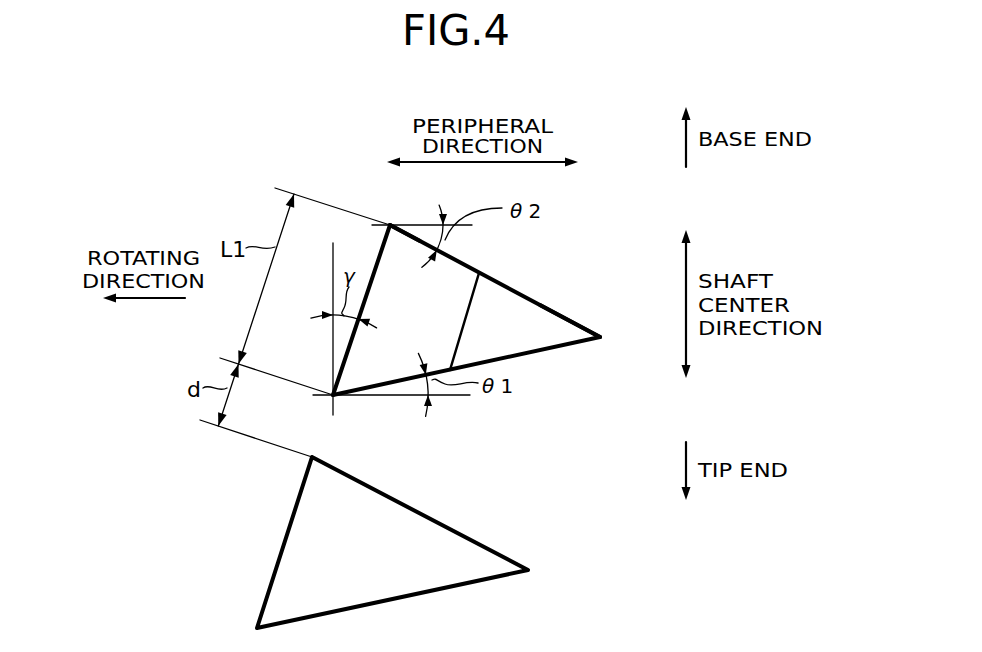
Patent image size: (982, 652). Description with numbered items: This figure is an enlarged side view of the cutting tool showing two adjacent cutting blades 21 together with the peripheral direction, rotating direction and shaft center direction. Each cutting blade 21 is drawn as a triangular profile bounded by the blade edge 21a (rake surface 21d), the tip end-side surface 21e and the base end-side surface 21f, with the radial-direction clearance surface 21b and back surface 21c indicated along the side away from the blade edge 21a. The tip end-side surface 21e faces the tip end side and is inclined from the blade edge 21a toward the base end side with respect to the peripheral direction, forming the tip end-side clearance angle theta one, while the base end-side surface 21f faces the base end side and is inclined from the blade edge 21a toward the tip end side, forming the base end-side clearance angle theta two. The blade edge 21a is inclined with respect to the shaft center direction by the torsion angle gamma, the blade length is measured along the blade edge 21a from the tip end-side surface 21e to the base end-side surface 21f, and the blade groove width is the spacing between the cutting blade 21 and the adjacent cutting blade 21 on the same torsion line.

The cutting blade 21 is at (527, 273).
The blade edge 21a is at (375, 268).
The radial-direction clearance surface 21b is at (443, 283).
The back surface 21c is at (542, 327).
The rake surface 21d is at (361, 310).
The tip end-side surface 21e is at (403, 379).
The base end-side surface 21f is at (418, 239).